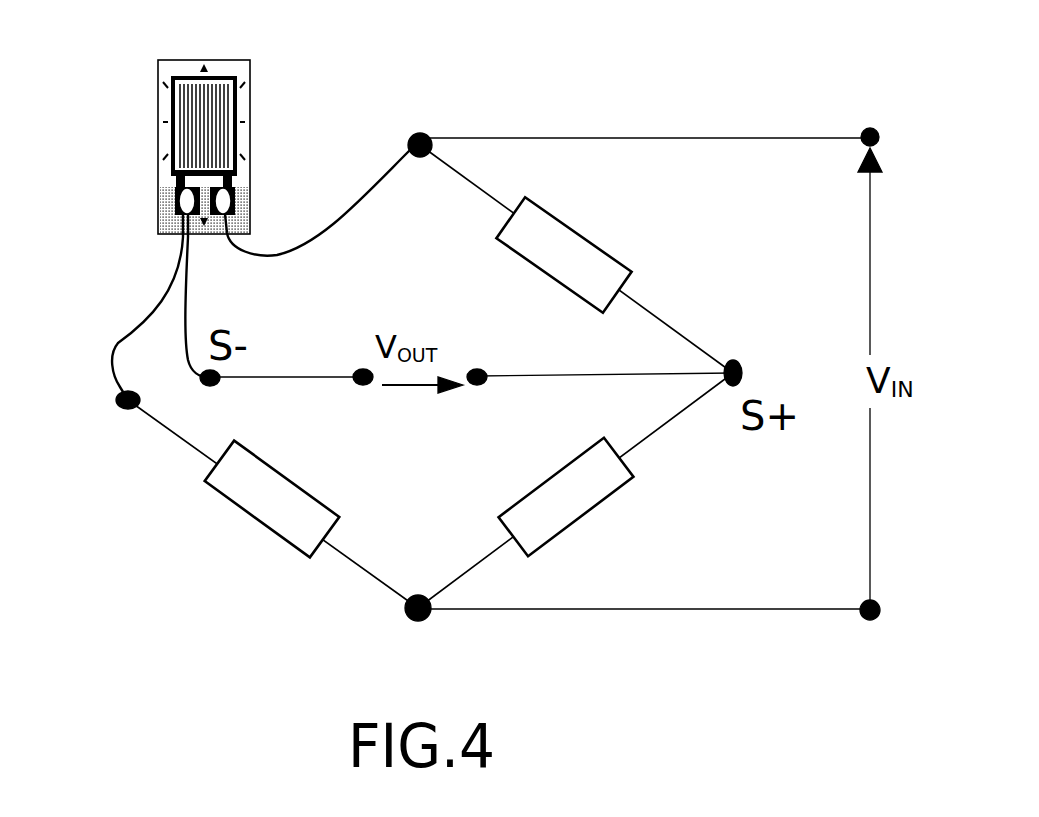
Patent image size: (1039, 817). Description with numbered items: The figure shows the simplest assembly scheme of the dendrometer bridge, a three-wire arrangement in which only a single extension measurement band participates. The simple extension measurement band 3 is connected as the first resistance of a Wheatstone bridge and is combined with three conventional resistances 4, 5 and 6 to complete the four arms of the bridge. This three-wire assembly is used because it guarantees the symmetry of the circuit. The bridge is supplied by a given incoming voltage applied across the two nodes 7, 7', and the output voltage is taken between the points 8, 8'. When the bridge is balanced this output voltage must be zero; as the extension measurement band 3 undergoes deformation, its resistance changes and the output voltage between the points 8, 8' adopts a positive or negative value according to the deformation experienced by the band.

The extension measurement band 3 is at (158, 63).
The conventional resistance 4 is at (543, 220).
The conventional resistance 5 is at (548, 527).
The conventional resistance 6 is at (297, 535).
The node 7 is at (466, 87).
The node 7' is at (388, 639).
The point 8 is at (342, 327).
The point 8' is at (488, 327).